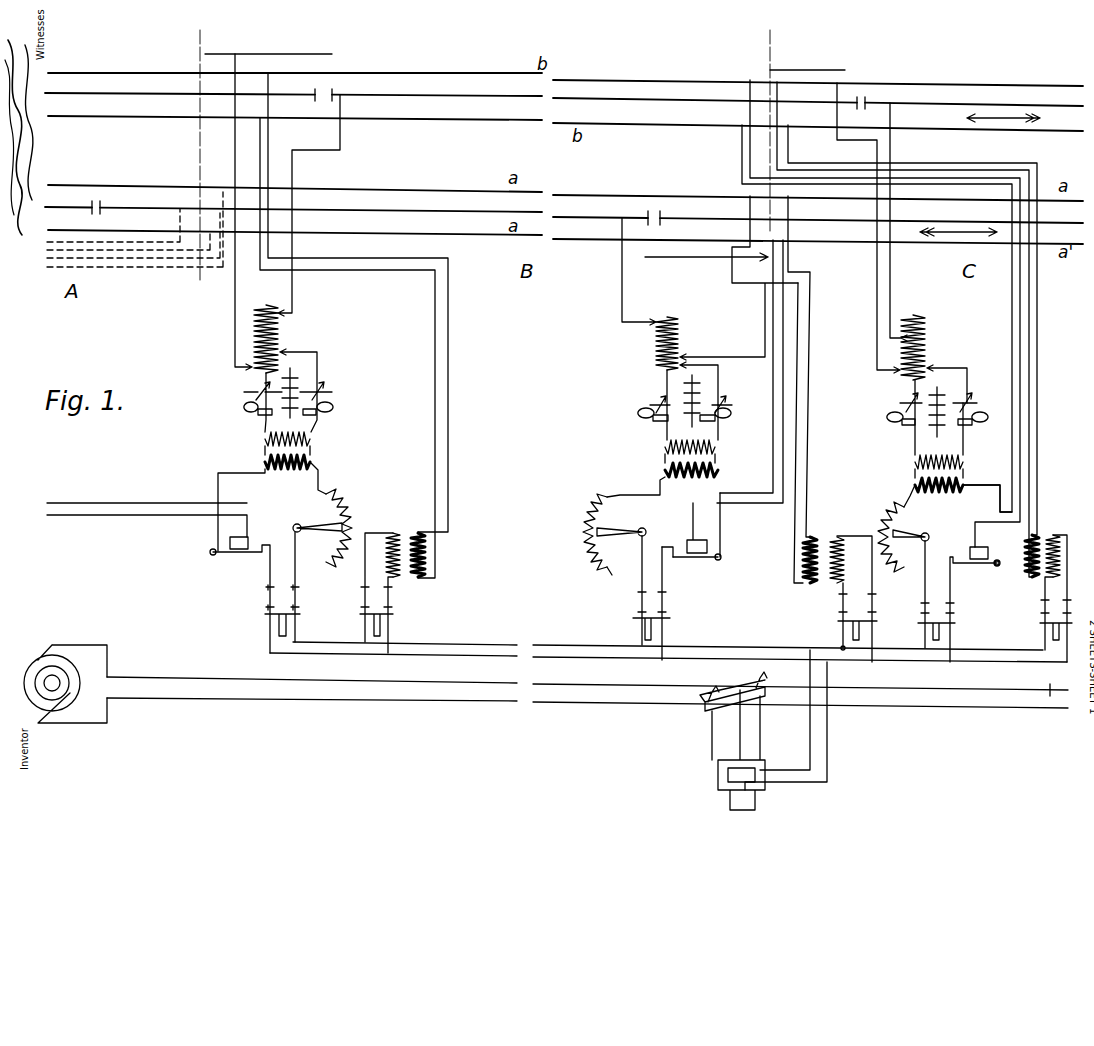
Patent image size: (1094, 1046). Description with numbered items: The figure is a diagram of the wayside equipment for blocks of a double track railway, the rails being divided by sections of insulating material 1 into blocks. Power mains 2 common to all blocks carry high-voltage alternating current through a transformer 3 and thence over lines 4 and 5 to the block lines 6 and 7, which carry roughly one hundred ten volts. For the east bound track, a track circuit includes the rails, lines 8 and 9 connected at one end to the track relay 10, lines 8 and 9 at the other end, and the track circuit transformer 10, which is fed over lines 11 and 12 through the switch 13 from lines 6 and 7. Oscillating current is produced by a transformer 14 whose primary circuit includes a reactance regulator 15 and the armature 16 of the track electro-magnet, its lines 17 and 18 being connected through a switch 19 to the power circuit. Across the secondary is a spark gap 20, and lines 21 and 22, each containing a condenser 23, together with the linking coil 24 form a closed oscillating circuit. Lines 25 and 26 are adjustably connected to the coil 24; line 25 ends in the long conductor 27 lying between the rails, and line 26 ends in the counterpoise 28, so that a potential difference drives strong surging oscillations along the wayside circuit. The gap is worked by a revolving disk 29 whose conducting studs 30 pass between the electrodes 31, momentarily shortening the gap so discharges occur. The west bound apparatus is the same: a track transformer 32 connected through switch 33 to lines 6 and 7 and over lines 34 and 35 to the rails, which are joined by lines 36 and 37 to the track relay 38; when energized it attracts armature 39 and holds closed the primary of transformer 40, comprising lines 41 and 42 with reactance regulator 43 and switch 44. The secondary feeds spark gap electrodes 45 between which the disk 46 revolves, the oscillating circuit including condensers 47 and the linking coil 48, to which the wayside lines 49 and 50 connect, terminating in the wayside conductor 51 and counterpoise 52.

The sections of insulating material 1 is at (197, 117).
The power mains 2 is at (563, 684).
The transformer 3 is at (718, 782).
The line 4 is at (810, 748).
The line 5 is at (830, 748).
The line 6 is at (772, 645).
The line 7 is at (790, 646).
The line 8 is at (788, 392).
The line 9 is at (777, 376).
The track relay 10 is at (696, 534).
The line 11 is at (834, 652).
The line 12 is at (858, 649).
The switch 13 is at (876, 612).
The transformer 14 is at (668, 462).
The reactance regulator 15 is at (587, 524).
The armature 16 is at (716, 562).
The line 17 is at (720, 516).
The line 18 is at (659, 492).
The switch 19 is at (672, 618).
The spark gap 20 is at (691, 432).
The line 21 is at (719, 382).
The line 22 is at (654, 382).
The condenser 23 is at (652, 402).
The inductance or linking coil 24 is at (654, 346).
The line 25 is at (622, 288).
The line 26 is at (762, 330).
The conductor 27 is at (832, 233).
The counterpoise 28 is at (684, 257).
The revolving disk 29 is at (692, 375).
The conducting studs 30 is at (691, 390).
The spark gap electrodes 31 is at (644, 426).
The track transformer 32 is at (395, 535).
The switch 33 is at (394, 614).
The line 34 is at (450, 364).
The line 35 is at (436, 402).
The line 36 is at (96, 514).
The line 37 is at (120, 502).
The track relay 38 is at (262, 534).
The armature 39 is at (998, 566).
The transformer 40 is at (264, 451).
The line 41 is at (214, 498).
The line 42 is at (284, 558).
The reactance regulator 43 is at (339, 496).
The switch 44 is at (290, 615).
The spark gap electrodes 45 is at (260, 416).
The disk 46 is at (290, 368).
The condensers 47 is at (252, 393).
The linking coil or helix 48 is at (605, 342).
The line 49 is at (294, 296).
The line 50 is at (232, 352).
The wayside circuit conductor 51 is at (120, 96).
The counterpoise 52 is at (297, 55).